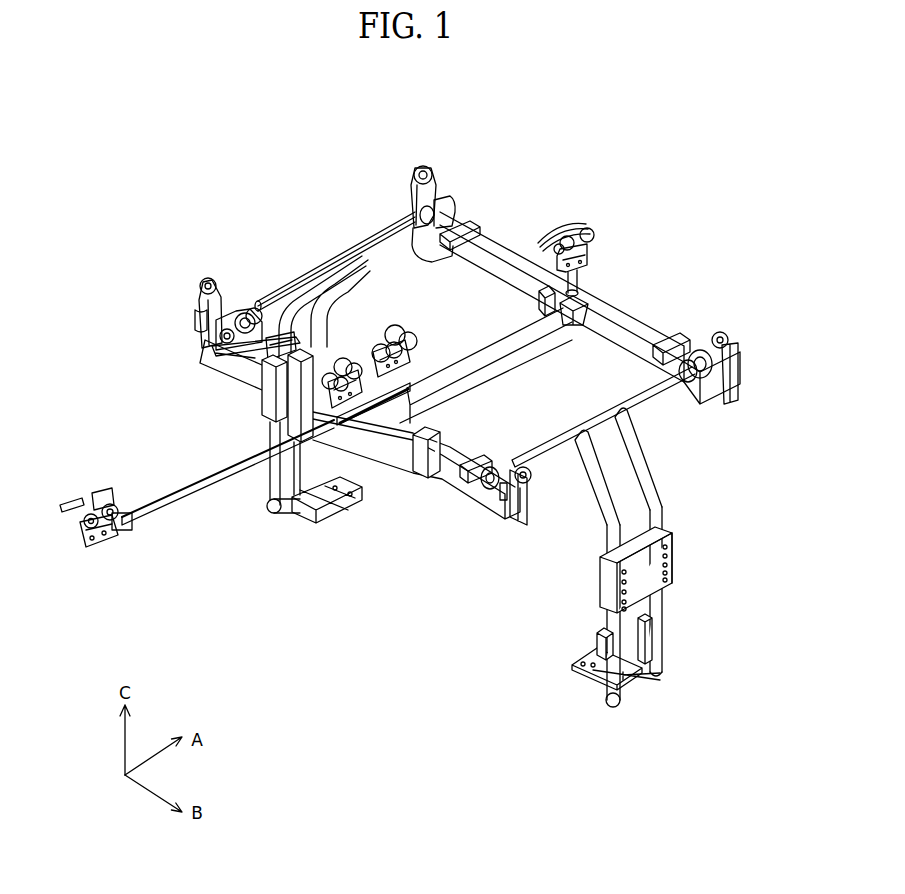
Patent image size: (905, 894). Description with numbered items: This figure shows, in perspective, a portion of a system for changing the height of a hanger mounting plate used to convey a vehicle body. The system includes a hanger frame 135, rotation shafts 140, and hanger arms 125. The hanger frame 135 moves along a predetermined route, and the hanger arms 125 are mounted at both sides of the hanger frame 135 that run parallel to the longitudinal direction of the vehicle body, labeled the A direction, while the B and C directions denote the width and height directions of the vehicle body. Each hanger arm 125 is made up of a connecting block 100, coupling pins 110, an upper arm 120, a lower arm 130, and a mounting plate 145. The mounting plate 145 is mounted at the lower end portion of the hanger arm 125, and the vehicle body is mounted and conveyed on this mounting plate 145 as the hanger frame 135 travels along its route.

The connecting block 100 is at (665, 561).
The coupling pins 110 is at (673, 582).
The upper arm 120 is at (643, 462).
The hanger arm 125 is at (611, 557).
The lower arm 130 is at (645, 637).
The hanger frame 135 is at (447, 483).
The rotation shafts 140 is at (553, 440).
The mounting plate 145 is at (590, 657).